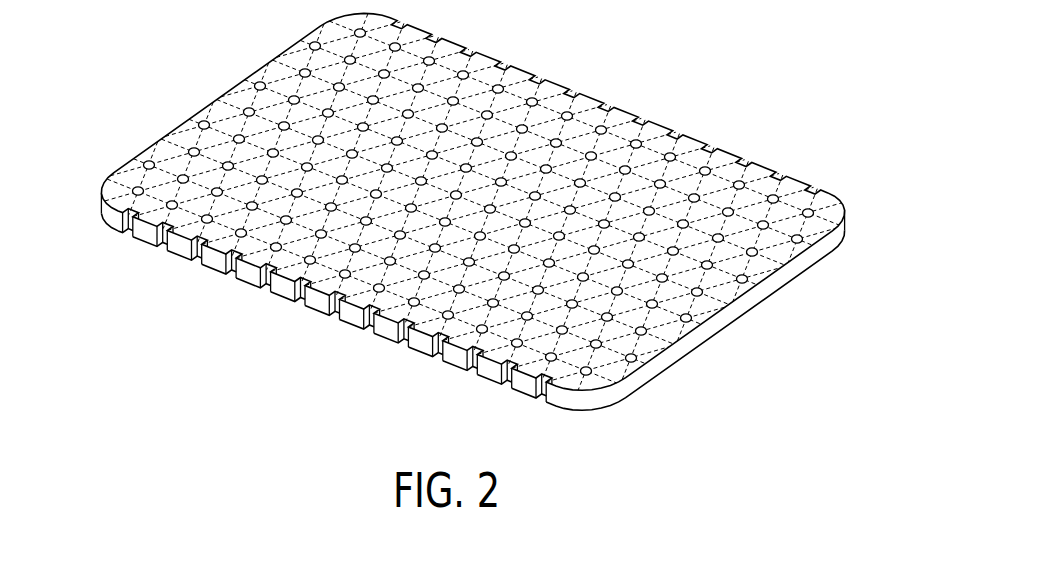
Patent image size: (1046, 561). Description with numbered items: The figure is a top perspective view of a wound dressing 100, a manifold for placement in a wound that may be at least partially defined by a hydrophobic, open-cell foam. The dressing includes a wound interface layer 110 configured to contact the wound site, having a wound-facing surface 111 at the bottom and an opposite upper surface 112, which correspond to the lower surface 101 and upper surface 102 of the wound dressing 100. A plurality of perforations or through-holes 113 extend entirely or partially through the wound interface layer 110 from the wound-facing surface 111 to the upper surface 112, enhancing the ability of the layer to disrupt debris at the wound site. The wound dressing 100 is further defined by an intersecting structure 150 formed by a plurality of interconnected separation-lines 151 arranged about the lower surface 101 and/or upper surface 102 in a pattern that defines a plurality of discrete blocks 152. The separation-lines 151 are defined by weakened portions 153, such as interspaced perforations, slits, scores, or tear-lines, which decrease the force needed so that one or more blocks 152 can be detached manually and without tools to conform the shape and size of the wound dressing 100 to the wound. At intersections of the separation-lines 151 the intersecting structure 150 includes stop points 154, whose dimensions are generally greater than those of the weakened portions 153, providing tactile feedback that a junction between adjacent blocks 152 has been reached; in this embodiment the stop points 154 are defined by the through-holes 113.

The wound dressing 100 is at (815, 73).
The wound interface layer 110 is at (845, 272).
The lower surface 101 is at (472, 343).
The wound-facing surface 111 is at (472, 343).
The upper surface 102 is at (472, 201).
The upper surface 112 is at (472, 201).
The through-holes 113 is at (466, 202).
The stop points 154 is at (466, 202).
The intersecting structure 150 is at (258, 122).
The separation-lines 151 is at (660, 288).
The discrete blocks 152 is at (483, 316).
The weakened portions 153 is at (123, 185).